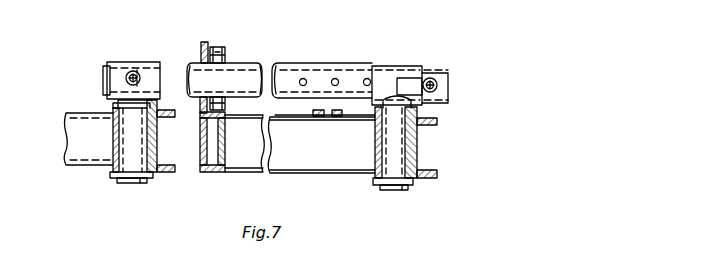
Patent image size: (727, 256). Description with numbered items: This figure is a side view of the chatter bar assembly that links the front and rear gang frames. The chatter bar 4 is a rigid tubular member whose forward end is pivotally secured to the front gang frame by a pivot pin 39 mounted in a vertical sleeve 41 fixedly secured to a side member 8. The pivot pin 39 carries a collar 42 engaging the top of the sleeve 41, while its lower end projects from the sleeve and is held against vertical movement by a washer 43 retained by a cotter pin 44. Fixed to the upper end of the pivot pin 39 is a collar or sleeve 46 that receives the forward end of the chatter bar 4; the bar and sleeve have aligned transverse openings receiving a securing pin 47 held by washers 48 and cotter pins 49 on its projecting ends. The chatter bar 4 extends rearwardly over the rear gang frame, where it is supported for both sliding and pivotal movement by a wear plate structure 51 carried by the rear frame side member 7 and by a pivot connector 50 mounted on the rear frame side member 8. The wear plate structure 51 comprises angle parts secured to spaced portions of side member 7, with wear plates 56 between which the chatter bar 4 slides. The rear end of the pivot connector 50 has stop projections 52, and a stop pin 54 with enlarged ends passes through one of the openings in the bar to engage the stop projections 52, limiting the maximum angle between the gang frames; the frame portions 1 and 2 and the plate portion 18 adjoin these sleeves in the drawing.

The frame tube 1 is at (170, 174).
The channel member 2 is at (290, 173).
The chatter bar 4 is at (276, 68).
The side member 7 is at (212, 172).
The side member 8 is at (418, 154).
The plate 18 is at (312, 112).
The pivot pin 39 is at (142, 182).
The vertical sleeve 41 is at (147, 140).
The collar 42 is at (114, 104).
The washer 43 is at (115, 176).
The cotter pin 44 is at (127, 182).
The collar or sleeve 46 is at (148, 64).
The securing pin 47 is at (139, 73).
The washer 48 is at (132, 74).
The cotter pin 49 is at (126, 81).
The pivot connector 50 is at (397, 66).
The wear plate structure 51 is at (204, 44).
The stop projections 52 is at (397, 87).
The stop pin 54 is at (428, 78).
The wear plates 56 is at (230, 63).